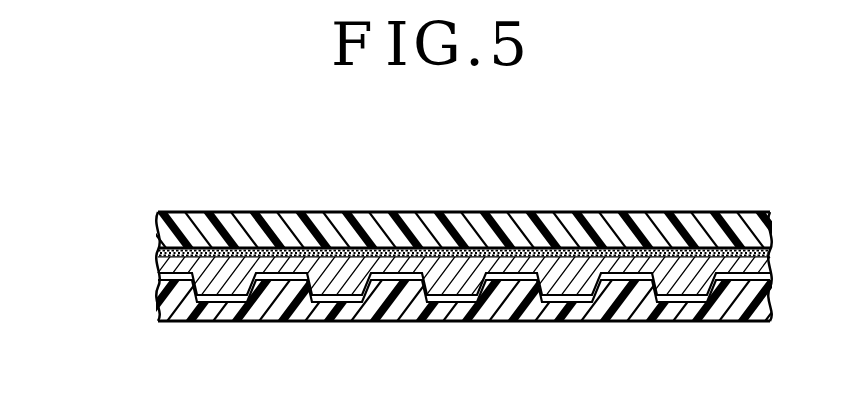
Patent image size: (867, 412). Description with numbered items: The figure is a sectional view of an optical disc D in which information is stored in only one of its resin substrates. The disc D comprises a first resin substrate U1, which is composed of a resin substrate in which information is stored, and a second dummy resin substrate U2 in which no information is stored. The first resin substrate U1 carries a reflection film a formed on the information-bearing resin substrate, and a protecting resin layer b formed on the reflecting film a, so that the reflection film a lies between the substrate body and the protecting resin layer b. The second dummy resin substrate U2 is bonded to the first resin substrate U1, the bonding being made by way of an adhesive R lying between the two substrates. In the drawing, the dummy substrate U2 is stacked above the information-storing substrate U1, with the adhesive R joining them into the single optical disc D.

The optical disc D is at (58, 215).
The second dummy resin substrate U2 is at (135, 210).
The first resin substrate U1 is at (135, 273).
The adhesive R is at (770, 234).
The reflection film a is at (770, 298).
The protecting resin layer b is at (693, 283).